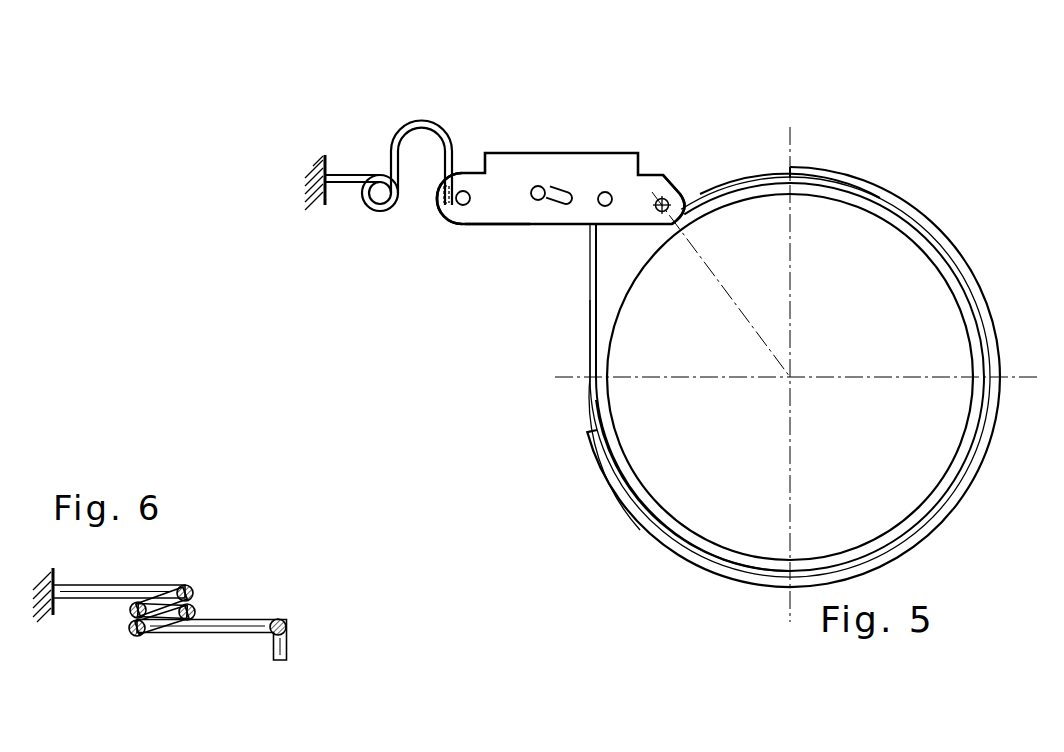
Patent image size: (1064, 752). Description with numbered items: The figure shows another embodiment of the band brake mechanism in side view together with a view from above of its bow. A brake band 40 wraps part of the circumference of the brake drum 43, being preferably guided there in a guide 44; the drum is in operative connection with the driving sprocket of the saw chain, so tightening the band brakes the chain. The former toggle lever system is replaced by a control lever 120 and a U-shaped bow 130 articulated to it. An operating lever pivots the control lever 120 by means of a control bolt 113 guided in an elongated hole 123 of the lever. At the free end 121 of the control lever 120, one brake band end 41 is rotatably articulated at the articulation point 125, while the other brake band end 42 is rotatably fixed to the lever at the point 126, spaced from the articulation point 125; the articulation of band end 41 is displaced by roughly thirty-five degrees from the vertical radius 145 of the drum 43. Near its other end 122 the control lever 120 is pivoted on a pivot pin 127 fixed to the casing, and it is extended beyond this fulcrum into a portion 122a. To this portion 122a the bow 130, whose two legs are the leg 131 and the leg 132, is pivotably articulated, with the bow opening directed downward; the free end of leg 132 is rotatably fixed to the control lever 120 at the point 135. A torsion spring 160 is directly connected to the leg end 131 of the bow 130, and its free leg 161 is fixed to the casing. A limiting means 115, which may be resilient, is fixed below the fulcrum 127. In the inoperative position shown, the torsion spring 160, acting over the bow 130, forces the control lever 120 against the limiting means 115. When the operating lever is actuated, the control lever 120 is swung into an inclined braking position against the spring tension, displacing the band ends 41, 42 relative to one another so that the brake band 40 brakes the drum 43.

In FIG. 5, the brake band 40 is at (590, 413).
In FIG. 5, the brake band end 41 is at (740, 187).
In FIG. 5, the brake band end 42 is at (596, 330).
In FIG. 5, the brake drum 43 is at (718, 523).
In FIG. 5, the guide 44 is at (632, 508).
In FIG. 5, the control bolt 113 is at (537, 186).
In FIG. 5, the limiting means 115 is at (482, 229).
In FIG. 5, the control lever 120 is at (533, 229).
In FIG. 5, the free end 121 is at (672, 182).
In FIG. 5, the other end 122 is at (465, 227).
In FIG. 5, the portion 122a is at (443, 220).
In FIG. 5, the elongated hole 123 is at (569, 195).
In FIG. 5, the articulation point 125 is at (669, 200).
In FIG. 5, the articulation point 126 is at (606, 192).
In FIG. 5, the pivot pin 127 is at (466, 191).
In FIG. 5, the U-shaped bow 130 is at (439, 118).
In FIG. 6, the U-shaped bow 130 is at (238, 627).
In FIG. 5, the leg 131 is at (390, 162).
In FIG. 5, the leg 132 is at (447, 147).
In FIG. 5, the fixing point 135 is at (450, 203).
In FIG. 5, the vertical radius 145 is at (793, 158).
In FIG. 6, the torsion spring 160 is at (197, 590).
In FIG. 5, the free leg 161 is at (342, 177).
In FIG. 6, the free leg 161 is at (102, 593).